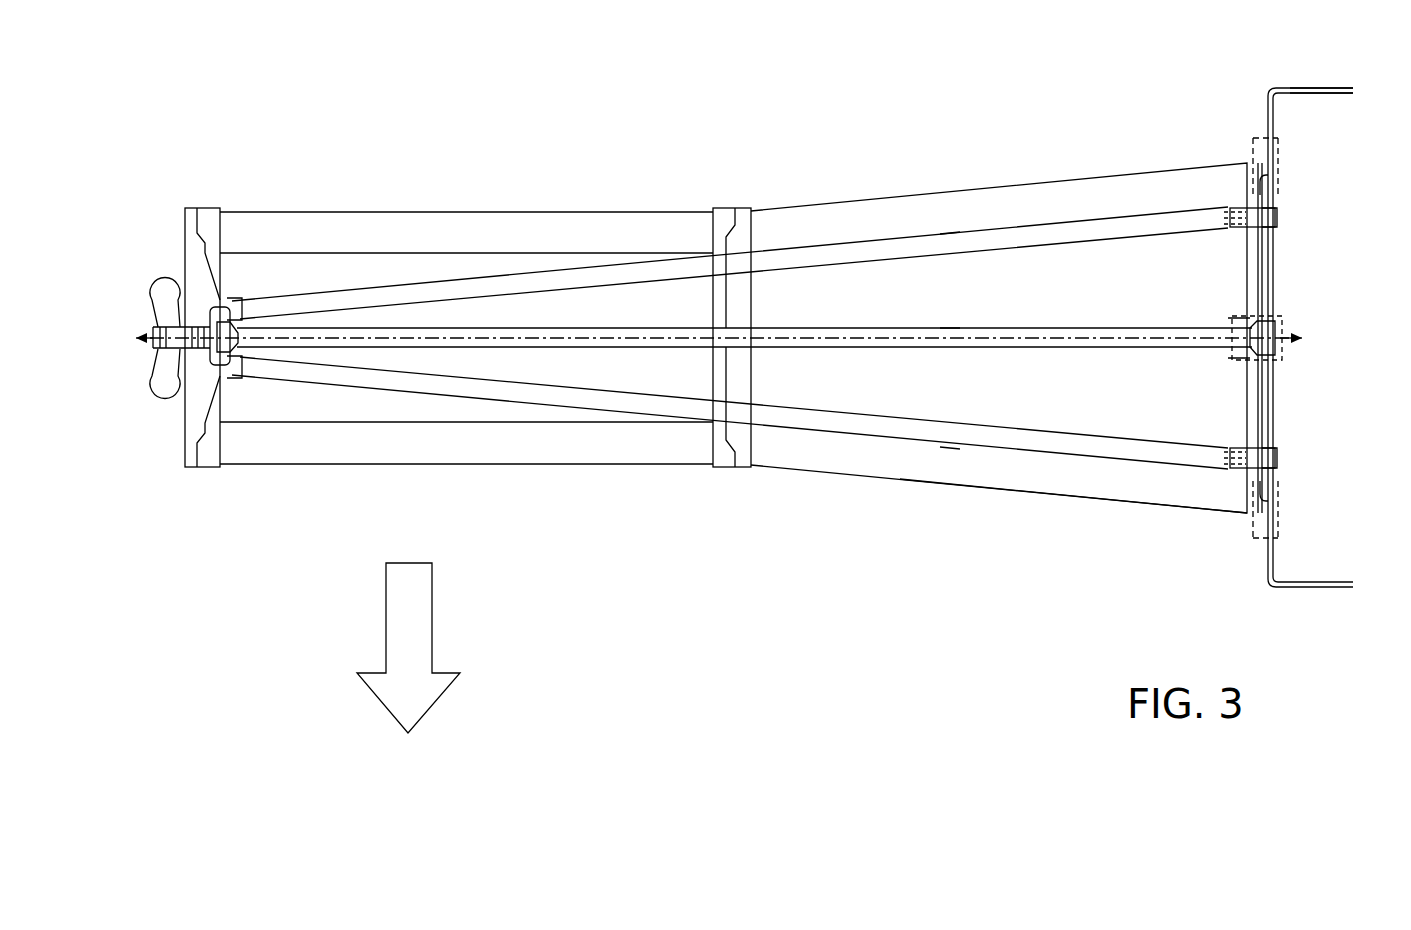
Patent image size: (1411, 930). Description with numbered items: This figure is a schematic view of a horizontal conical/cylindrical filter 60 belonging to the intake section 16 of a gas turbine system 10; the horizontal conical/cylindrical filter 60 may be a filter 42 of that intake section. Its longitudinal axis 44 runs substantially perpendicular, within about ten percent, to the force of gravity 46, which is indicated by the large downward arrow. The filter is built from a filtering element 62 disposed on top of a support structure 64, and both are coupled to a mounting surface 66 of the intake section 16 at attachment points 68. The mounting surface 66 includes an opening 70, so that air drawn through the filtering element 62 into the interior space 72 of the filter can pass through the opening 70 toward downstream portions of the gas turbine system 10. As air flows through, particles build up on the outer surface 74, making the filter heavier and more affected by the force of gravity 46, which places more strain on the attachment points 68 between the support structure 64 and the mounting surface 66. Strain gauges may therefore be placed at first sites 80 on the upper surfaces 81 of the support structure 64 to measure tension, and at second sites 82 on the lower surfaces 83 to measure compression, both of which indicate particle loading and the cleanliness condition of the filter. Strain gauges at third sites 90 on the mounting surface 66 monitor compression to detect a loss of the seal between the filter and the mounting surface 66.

The gas turbine system 10 is at (737, 45).
The intake section 16 is at (672, 103).
The filter 42 is at (1006, 316).
The horizontal conical/cylindrical filter 60 is at (822, 156).
The longitudinal axis 44 is at (282, 299).
The force of gravity 46 is at (432, 615).
The filtering element 62 is at (464, 197).
The support structure 64 is at (379, 282).
The mounting surface 66 is at (1312, 79).
The attachment points 68 is at (1285, 212).
The opening 70 is at (1288, 271).
The interior space 72 is at (558, 358).
The outer surface 74 is at (853, 474).
The first sites 80 is at (1240, 212).
The upper surfaces 81 is at (846, 246).
The second sites 82 is at (1243, 232).
The lower surfaces 83 is at (958, 255).
The third sites 90 is at (1250, 152).